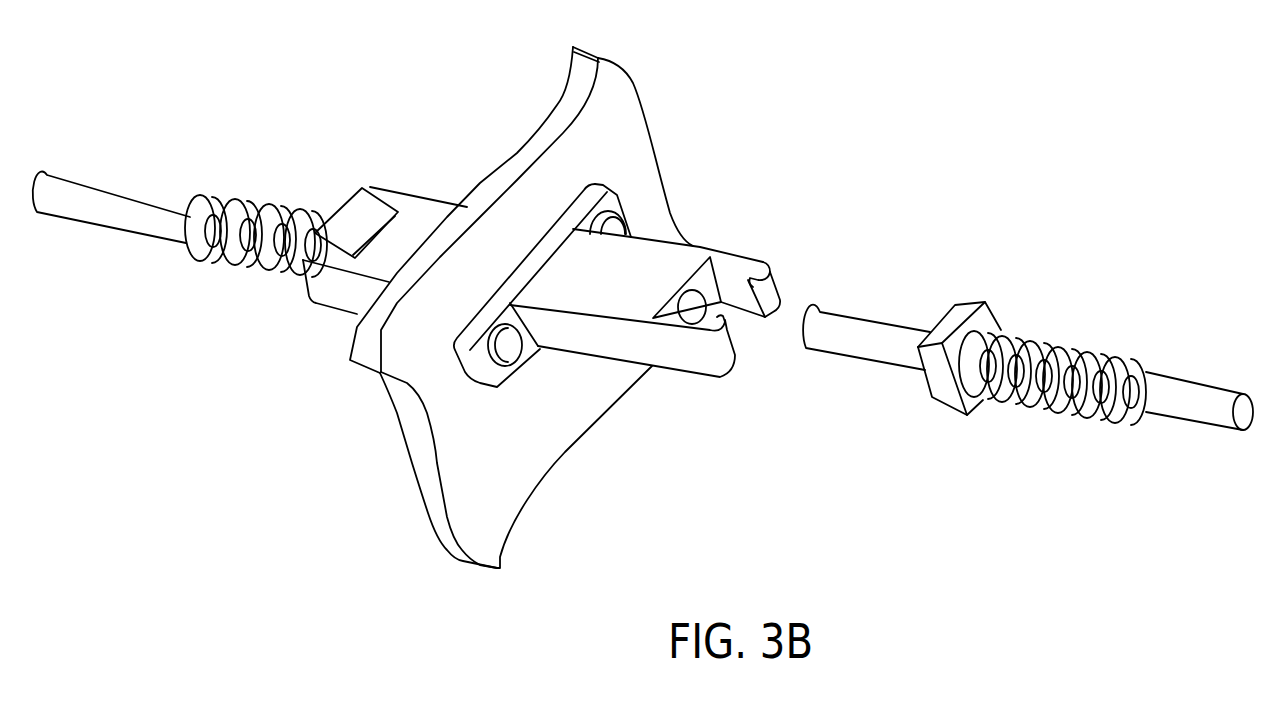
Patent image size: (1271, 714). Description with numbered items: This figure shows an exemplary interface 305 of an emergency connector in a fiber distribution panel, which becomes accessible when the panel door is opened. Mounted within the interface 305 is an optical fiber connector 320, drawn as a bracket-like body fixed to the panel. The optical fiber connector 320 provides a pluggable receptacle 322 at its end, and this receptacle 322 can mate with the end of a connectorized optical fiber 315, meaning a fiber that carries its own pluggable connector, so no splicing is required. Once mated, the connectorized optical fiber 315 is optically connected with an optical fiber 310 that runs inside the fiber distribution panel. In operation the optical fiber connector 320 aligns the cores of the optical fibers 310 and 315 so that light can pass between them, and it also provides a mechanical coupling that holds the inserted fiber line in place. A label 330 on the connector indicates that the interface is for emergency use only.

The interface 305 is at (620, 92).
The optical fiber 310 is at (250, 202).
The connectorized optical fiber 315 is at (985, 320).
The optical fiber connector 320 is at (398, 200).
The pluggable receptacle 322 is at (768, 282).
The label 330 is at (457, 495).